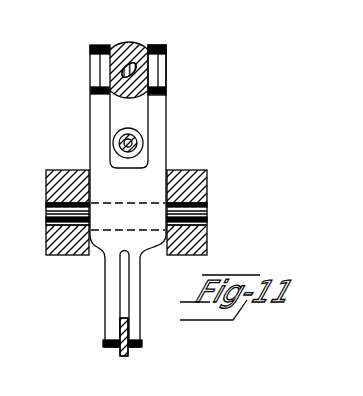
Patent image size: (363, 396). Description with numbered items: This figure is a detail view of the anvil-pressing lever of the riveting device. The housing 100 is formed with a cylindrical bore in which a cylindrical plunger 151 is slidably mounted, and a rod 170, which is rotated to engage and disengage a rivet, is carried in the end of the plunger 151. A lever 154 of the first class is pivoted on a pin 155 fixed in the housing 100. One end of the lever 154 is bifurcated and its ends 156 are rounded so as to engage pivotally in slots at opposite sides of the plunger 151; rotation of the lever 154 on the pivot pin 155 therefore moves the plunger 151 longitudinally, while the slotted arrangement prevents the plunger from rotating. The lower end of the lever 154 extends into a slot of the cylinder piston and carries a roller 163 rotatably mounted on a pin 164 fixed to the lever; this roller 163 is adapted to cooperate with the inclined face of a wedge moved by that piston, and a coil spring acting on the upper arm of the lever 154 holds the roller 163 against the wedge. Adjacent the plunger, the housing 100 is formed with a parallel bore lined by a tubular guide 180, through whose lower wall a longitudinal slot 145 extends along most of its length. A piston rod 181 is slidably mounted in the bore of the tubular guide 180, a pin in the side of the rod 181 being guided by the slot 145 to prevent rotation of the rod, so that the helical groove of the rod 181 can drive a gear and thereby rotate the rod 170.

The housing 100 is at (193, 193).
The longitudinal slot 145 is at (120, 155).
The cylindrical plunger 151 is at (123, 50).
The lever 154 is at (163, 142).
The pivot pin 155 is at (200, 208).
The rounded ends 156 is at (168, 68).
The roller 163 is at (128, 347).
The pin 164 is at (110, 343).
The rod 170 is at (143, 48).
The tubular guide 180 is at (112, 150).
The piston rod 181 is at (130, 147).